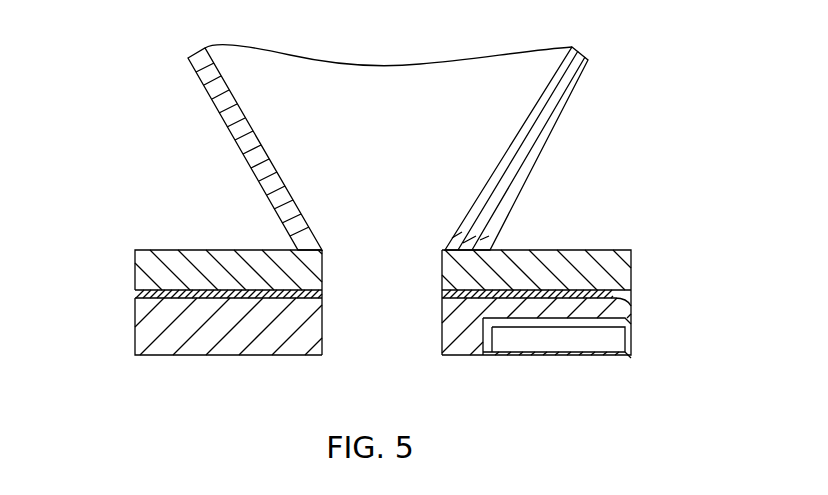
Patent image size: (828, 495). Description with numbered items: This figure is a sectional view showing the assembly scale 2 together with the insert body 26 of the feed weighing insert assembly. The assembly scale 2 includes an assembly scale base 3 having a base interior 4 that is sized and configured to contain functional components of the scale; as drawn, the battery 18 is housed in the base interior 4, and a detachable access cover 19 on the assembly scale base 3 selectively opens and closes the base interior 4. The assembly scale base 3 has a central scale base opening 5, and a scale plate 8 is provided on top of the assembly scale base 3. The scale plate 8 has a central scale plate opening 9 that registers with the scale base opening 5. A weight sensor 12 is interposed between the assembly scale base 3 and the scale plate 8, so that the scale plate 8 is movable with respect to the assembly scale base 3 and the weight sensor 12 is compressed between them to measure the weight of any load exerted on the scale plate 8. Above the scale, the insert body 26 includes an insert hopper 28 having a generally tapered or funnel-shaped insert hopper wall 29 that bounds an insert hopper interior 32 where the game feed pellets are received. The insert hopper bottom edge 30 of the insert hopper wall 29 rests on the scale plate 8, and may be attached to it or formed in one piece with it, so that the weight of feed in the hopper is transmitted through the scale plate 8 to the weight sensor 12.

The assembly scale 2 is at (632, 263).
The assembly scale base 3 is at (232, 342).
The base interior 4 is at (487, 327).
The scale base opening 5 is at (424, 320).
The scale plate 8 is at (135, 258).
The scale plate opening 9 is at (412, 260).
The weight sensor 12 is at (135, 297).
The battery 18 is at (593, 338).
The detachable access cover 19 is at (627, 355).
The insert body 26 is at (575, 120).
The insert hopper 28 is at (233, 143).
The insert hopper wall 29 is at (258, 167).
The insert hopper bottom edge 30 is at (490, 250).
The insert hopper interior 32 is at (277, 79).